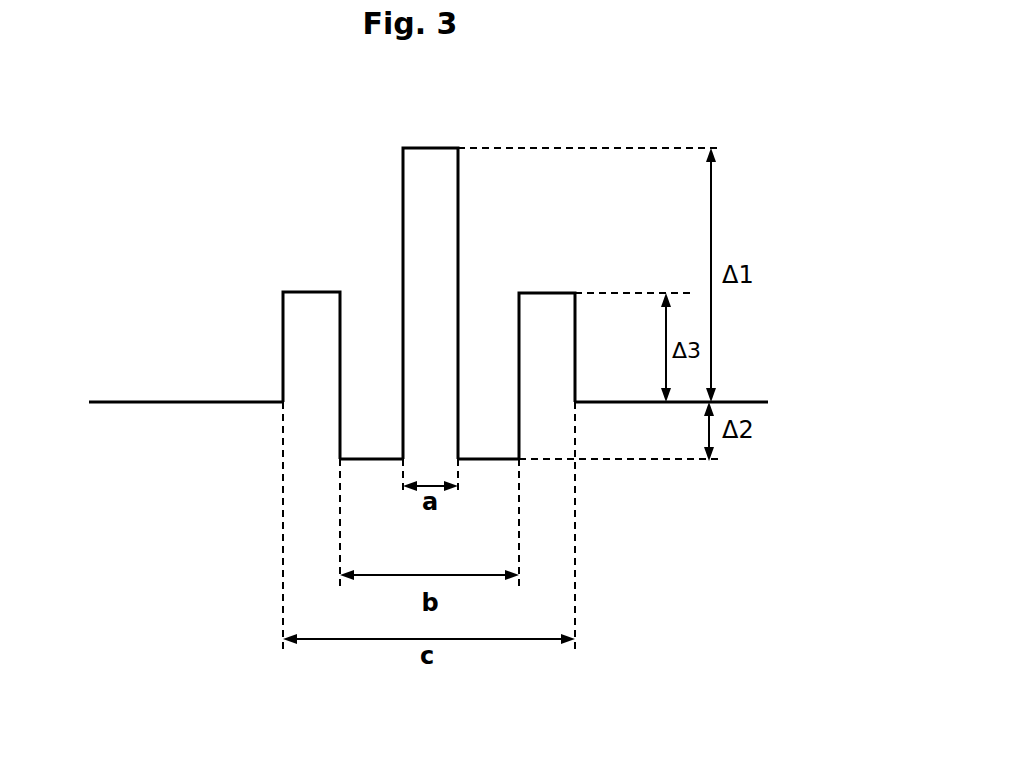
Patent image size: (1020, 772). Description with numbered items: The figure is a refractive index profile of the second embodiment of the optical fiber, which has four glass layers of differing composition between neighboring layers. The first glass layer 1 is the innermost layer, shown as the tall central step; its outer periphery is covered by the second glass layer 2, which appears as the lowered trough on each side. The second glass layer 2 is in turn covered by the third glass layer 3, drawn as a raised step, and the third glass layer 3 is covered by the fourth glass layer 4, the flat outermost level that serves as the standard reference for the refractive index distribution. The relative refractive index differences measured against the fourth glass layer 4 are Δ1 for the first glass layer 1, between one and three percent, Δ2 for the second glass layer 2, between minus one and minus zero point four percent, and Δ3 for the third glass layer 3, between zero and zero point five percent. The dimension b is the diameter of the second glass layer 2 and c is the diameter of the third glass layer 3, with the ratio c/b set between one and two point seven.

The first glass layer 1 is at (432, 148).
The second glass layer 2 is at (368, 459).
The third glass layer 3 is at (312, 292).
The fourth glass layer 4 is at (229, 402).